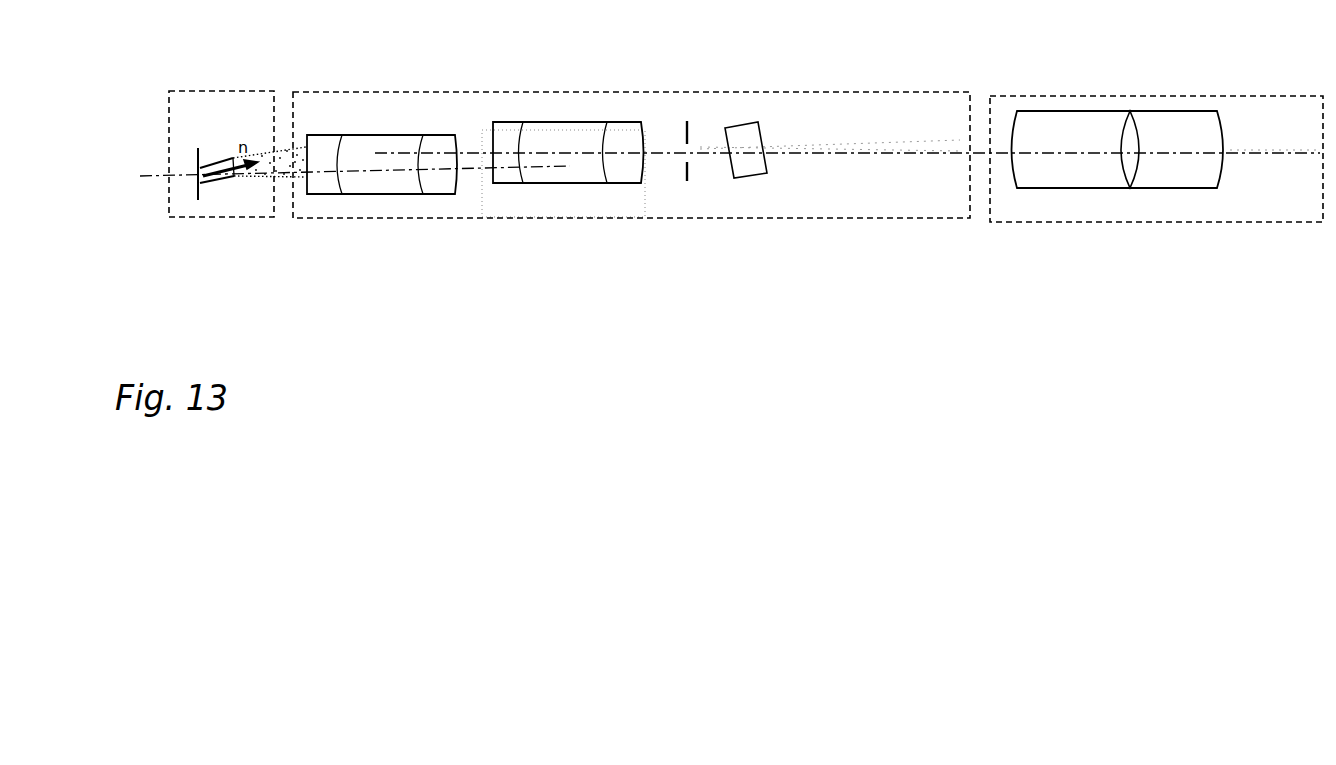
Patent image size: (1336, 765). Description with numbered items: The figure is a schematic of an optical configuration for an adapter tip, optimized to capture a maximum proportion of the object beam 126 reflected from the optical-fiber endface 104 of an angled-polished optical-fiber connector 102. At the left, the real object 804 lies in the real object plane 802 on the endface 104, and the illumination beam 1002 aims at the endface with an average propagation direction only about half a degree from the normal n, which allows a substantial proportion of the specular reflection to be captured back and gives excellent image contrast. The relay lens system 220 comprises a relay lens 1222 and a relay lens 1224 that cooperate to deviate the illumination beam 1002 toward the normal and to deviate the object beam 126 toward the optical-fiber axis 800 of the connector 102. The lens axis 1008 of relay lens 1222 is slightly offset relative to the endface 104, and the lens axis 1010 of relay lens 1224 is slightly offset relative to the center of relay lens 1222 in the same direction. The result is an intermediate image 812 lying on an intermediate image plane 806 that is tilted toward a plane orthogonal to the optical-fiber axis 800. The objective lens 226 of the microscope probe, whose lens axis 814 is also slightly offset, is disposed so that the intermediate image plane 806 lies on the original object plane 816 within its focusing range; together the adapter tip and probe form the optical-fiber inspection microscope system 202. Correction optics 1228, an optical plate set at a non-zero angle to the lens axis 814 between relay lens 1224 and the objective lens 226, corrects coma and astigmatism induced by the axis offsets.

The optical-fiber endface 104 is at (198, 166).
The optical-fiber axis 800 is at (172, 178).
The real object 804 is at (199, 150).
The real object plane 802 is at (199, 192).
The angled-polished optical-fiber connector 102 is at (198, 190).
The object beam 126 is at (223, 186).
The illumination beam 1002 is at (283, 177).
The lens axis of relay lens 1222 1008 is at (356, 165).
The relay lens 1222 is at (397, 194).
The lens axis of relay lens 1224 1010 is at (509, 152).
The relay lens 1224 is at (587, 184).
The intermediate image plane 806 is at (688, 176).
The intermediate image 812 is at (689, 140).
The original object plane 816 is at (689, 137).
The relay lens system 220 is at (858, 93).
The correction optics 1228 is at (749, 180).
The optical-fiber inspection microscope system 202 is at (1206, 97).
The objective lens 226 is at (1077, 188).
The lens axis of the objective lens 814 is at (1047, 150).